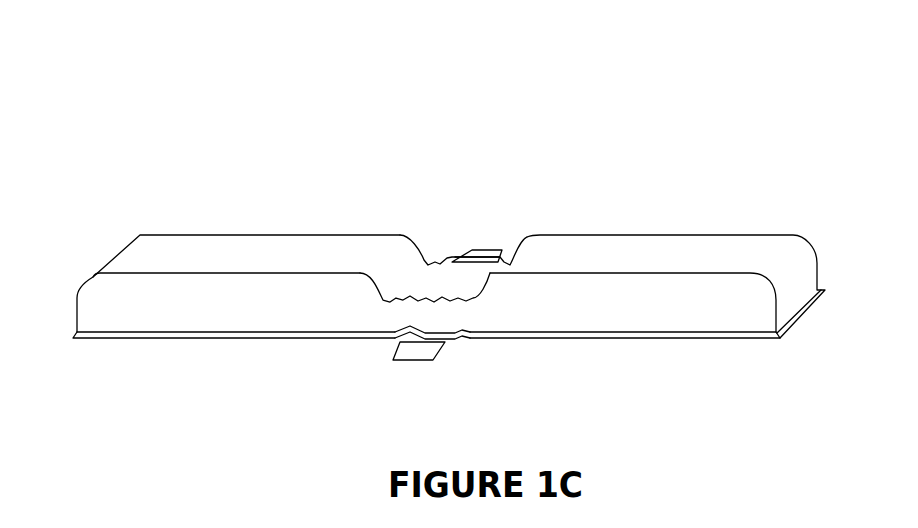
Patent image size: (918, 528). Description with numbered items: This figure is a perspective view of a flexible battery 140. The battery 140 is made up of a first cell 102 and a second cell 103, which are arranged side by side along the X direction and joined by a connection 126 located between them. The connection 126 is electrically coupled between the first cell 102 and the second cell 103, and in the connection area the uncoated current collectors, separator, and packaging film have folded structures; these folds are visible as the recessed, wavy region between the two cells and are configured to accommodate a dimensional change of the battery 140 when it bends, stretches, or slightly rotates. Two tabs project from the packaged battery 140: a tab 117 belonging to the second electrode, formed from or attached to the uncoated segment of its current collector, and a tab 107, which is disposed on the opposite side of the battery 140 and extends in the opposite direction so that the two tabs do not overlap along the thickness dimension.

The battery 140 is at (485, 42).
The first cell 102 is at (248, 192).
The second cell 103 is at (659, 190).
The connection 126 is at (449, 214).
The tab 117 is at (496, 232).
The tab 107 is at (422, 365).